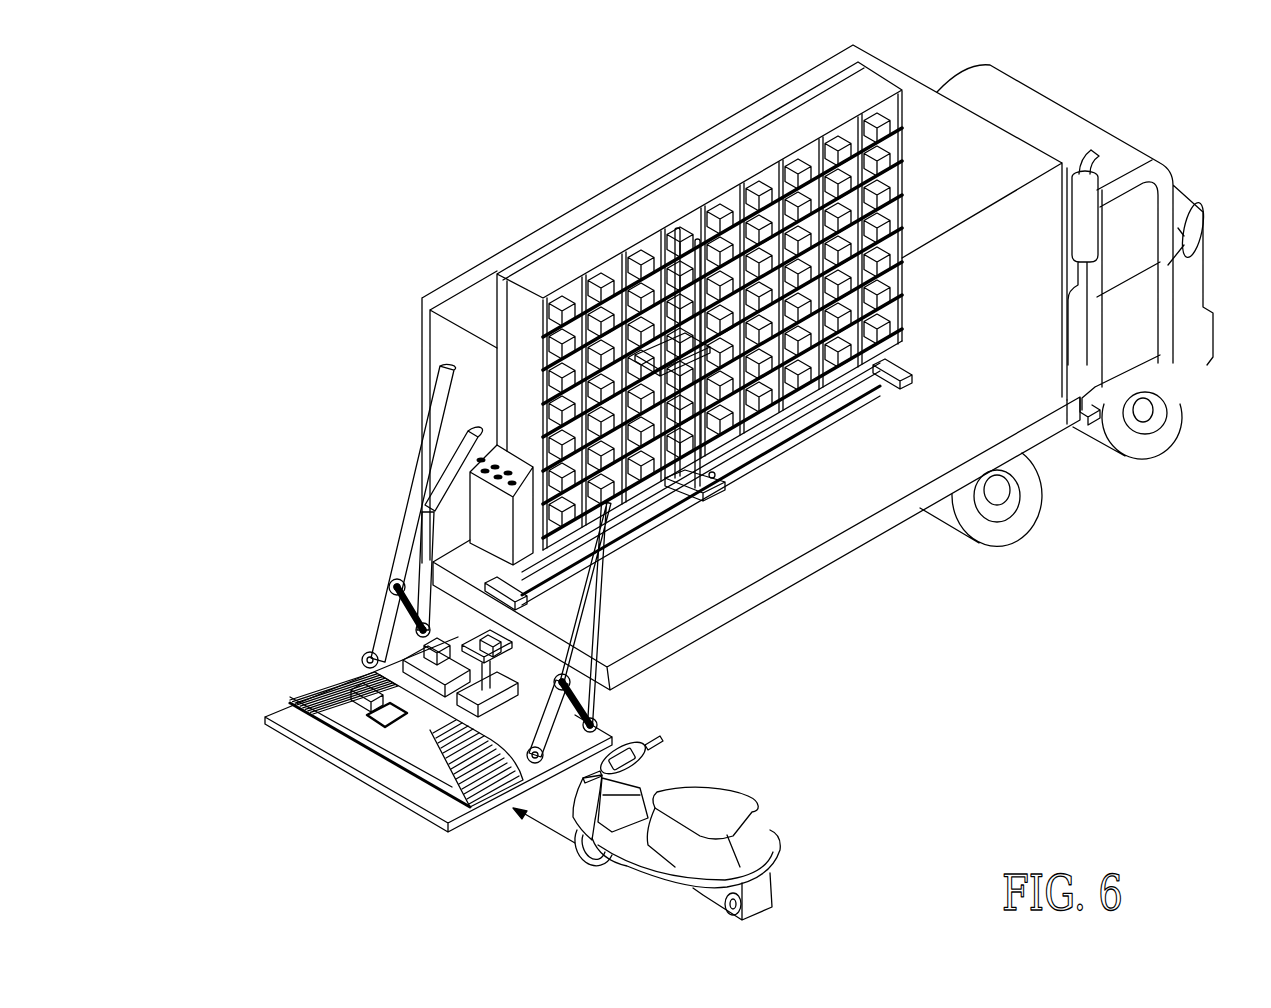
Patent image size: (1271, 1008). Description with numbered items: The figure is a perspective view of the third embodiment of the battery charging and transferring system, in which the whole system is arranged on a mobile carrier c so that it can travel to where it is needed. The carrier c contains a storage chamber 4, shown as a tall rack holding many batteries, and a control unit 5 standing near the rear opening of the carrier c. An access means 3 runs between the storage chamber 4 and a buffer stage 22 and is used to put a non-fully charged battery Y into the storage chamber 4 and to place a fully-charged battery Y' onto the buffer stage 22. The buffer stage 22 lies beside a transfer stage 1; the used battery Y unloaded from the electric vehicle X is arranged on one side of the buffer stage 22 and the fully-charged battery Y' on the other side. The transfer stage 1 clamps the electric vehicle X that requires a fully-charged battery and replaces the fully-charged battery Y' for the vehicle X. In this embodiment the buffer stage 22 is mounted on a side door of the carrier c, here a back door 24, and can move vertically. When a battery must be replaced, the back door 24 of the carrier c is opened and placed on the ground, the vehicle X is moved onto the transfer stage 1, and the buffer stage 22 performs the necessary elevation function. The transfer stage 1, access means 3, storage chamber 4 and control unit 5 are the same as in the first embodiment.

The transfer stage 1 is at (360, 755).
The access means 3 is at (722, 508).
The storage chamber 4 is at (597, 206).
The control unit 5 is at (478, 497).
The buffer stage 22 is at (400, 667).
The back door 24 is at (287, 718).
The used battery Y is at (408, 624).
The fully-charged battery Y' is at (355, 629).
The electric vehicle X is at (758, 798).
The mobile carrier c is at (1103, 486).